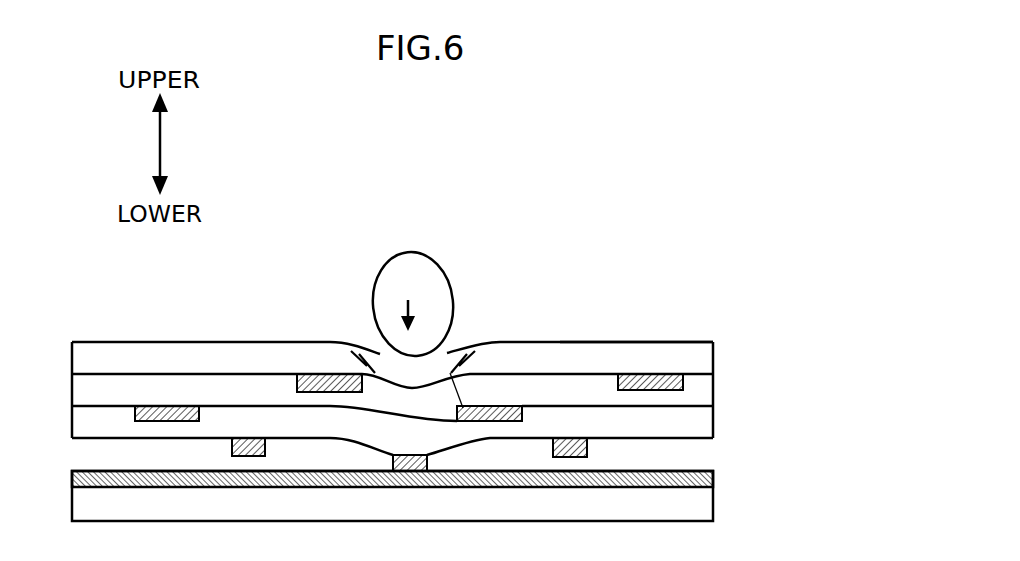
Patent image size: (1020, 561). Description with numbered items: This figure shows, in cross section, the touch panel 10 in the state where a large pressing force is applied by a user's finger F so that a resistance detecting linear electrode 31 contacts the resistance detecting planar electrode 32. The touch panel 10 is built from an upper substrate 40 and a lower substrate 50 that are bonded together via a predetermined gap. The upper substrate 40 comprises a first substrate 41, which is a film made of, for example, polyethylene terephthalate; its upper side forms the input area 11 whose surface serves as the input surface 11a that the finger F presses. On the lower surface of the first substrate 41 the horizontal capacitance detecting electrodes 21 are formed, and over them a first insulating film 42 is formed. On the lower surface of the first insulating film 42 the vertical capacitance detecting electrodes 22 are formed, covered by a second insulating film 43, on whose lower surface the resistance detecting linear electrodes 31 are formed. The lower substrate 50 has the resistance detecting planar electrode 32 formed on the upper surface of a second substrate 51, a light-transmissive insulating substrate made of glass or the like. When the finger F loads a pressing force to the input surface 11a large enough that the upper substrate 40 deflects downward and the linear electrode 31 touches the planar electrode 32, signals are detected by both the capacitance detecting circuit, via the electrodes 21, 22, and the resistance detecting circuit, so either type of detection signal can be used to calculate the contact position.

The touch panel 10 is at (368, 207).
The input area 11 is at (568, 327).
The input surface 11a is at (630, 341).
The horizontal capacitance detecting electrodes 21 is at (330, 374).
The vertical capacitance detecting electrodes 22 is at (148, 406).
The resistance detecting linear electrodes 31 is at (405, 455).
The resistance detecting planar electrode 32 is at (699, 468).
The upper substrate 40 is at (58, 342).
The first substrate 41 is at (697, 360).
The first insulating film 42 is at (698, 398).
The second insulating film 43 is at (700, 427).
The lower substrate 50 is at (58, 467).
The second substrate 51 is at (700, 515).
The finger F is at (437, 255).